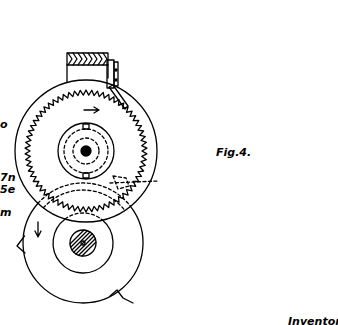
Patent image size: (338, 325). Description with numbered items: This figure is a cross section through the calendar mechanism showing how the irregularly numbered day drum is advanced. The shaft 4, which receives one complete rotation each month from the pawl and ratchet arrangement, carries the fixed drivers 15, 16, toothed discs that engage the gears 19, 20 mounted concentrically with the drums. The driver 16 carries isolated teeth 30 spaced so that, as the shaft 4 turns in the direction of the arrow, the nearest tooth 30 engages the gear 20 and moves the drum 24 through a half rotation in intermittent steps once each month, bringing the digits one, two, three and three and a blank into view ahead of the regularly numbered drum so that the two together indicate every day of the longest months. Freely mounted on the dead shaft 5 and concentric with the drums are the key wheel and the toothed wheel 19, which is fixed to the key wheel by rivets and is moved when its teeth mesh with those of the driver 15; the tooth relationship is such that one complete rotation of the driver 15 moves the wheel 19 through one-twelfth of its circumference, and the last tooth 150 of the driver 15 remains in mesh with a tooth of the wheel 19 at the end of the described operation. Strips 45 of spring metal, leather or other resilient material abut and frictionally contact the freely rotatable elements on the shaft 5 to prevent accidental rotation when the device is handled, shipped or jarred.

The indicia-bearing drum 24 is at (150, 122).
The toothed wheel 19 is at (136, 162).
The gear 20 is at (113, 150).
The dead shaft 5 is at (81, 152).
The strips of resilient material 45 is at (127, 105).
The driver 16 is at (137, 270).
The last tooth 150 is at (103, 216).
The driver 15 is at (108, 243).
The shaft 4 is at (73, 246).
The teeth 30 is at (89, 232).